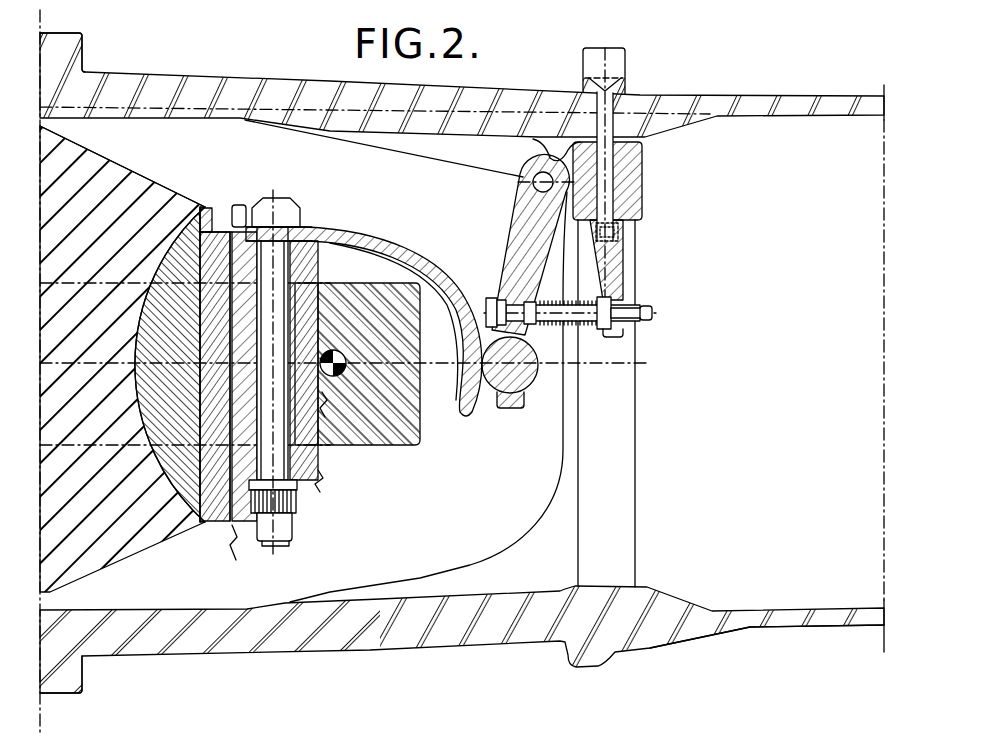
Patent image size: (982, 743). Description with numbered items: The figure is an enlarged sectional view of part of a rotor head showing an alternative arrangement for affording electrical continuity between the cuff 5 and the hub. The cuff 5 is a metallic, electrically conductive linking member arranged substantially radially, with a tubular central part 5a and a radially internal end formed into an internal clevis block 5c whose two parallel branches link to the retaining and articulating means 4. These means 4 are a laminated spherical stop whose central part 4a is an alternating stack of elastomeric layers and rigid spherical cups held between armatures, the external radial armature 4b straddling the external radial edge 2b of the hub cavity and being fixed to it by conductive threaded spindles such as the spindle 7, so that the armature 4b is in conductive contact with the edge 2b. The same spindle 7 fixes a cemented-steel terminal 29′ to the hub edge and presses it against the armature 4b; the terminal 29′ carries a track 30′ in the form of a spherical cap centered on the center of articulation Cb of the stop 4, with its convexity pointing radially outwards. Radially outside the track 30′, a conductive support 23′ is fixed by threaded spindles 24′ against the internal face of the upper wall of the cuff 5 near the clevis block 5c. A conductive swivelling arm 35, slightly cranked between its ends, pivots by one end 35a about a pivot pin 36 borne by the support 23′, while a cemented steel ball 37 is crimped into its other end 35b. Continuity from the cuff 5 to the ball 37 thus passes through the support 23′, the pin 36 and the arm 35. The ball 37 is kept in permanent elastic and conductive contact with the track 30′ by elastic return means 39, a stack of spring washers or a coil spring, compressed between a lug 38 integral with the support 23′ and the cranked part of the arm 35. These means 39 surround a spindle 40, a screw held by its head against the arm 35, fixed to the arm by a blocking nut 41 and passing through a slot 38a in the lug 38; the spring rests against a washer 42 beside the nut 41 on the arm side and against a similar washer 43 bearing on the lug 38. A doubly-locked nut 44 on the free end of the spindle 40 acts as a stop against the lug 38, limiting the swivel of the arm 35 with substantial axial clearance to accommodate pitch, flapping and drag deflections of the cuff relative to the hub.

The cuff 5 is at (714, 88).
The tubular central part 5a is at (728, 618).
The internal clevis block 5c is at (62, 60).
The retaining and articulating means 4 is at (133, 558).
The central part 4a is at (118, 207).
The external radial armature 4b is at (215, 213).
The external radial edge 2b is at (386, 413).
The center of articulation Cb is at (340, 385).
The threaded spindle 7 is at (280, 467).
The terminal 29′ is at (325, 220).
The track 30′ is at (427, 247).
The swivelling arm 35 is at (527, 210).
The end of the arm 35a is at (525, 178).
The other end of the arm 35b is at (511, 393).
The pivot pin 36 is at (542, 172).
The ball 37 is at (498, 384).
The support 23′ is at (626, 167).
The threaded spindles 24′ is at (628, 228).
The lug 38 is at (614, 262).
The slot 38a is at (624, 328).
The elastic return means 39 is at (594, 327).
The spindle 40 is at (553, 318).
The blocking nut 41 is at (497, 300).
The washer 42 is at (504, 272).
The washer 43 is at (618, 302).
The doubly-locked nut 44 is at (653, 315).